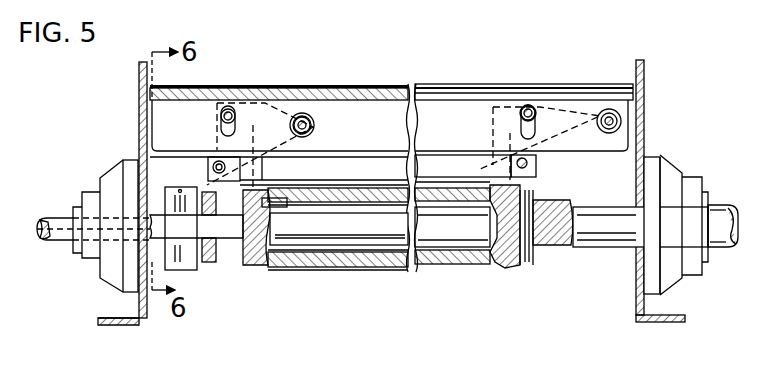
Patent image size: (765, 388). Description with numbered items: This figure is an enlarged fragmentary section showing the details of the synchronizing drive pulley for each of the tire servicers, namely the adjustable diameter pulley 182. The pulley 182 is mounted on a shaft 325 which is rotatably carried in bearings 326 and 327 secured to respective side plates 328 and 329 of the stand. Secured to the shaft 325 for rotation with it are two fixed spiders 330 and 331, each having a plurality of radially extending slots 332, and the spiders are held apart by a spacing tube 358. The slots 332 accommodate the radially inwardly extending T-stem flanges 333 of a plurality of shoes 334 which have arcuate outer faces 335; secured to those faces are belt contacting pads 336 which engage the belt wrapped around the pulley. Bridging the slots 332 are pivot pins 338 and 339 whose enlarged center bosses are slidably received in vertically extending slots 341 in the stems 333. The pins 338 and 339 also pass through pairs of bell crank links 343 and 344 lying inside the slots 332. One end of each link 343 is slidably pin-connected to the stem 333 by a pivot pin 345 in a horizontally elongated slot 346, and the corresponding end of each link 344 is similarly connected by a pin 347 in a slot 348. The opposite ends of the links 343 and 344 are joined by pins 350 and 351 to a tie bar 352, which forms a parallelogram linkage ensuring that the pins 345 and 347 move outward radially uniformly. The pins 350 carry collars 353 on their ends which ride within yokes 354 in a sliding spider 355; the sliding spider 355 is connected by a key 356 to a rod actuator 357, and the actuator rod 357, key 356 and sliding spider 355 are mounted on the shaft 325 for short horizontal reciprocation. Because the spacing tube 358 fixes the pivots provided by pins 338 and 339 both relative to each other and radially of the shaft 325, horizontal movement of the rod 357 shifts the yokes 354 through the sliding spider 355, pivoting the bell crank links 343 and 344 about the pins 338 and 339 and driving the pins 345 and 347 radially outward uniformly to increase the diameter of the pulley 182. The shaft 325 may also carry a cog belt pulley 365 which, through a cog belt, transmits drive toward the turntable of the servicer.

The adjustable diameter pulley 182 is at (485, 337).
The shaft 325 is at (597, 245).
The bearing 326 is at (112, 178).
The bearing 327 is at (667, 173).
The side plate 328 is at (138, 94).
The side plate 329 is at (644, 117).
The fixed spider 330 is at (273, 275).
The fixed spider 331 is at (507, 272).
The radially extending slot 332 is at (263, 178).
The T-stem flange 333 is at (455, 100).
The shoe 334 is at (492, 85).
The arcuate outer face 335 is at (200, 86).
The belt contacting pad 336 is at (354, 86).
The pivot pin 338 is at (228, 108).
The pivot pin 339 is at (532, 108).
The vertically extending slot 341 is at (222, 130).
The bell crank link 343 is at (290, 105).
The bell crank link 344 is at (553, 157).
The pivot pin 345 is at (307, 119).
The horizontally elongated slot 346 is at (313, 128).
The pin 347 is at (608, 112).
The slot 348 is at (617, 118).
The pin 350 is at (211, 166).
The pin 351 is at (533, 170).
The tie bar 352 is at (473, 153).
The collar 353 is at (258, 203).
The yoke 354 is at (209, 158).
The sliding spider 355 is at (222, 272).
The key 356 is at (187, 270).
The rod actuator 357 is at (58, 218).
The spacing tube 358 is at (373, 268).
The cog belt pulley 365 is at (490, 167).